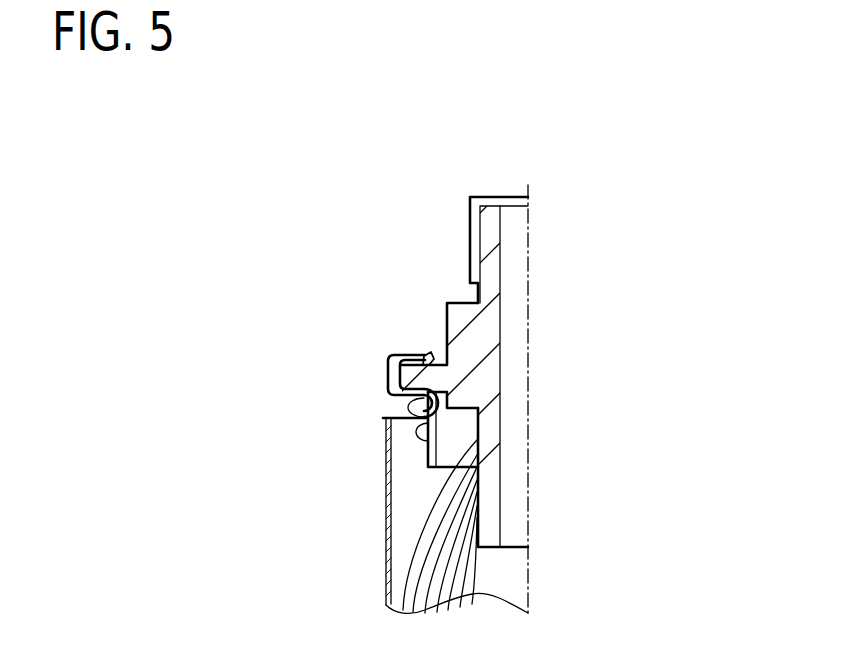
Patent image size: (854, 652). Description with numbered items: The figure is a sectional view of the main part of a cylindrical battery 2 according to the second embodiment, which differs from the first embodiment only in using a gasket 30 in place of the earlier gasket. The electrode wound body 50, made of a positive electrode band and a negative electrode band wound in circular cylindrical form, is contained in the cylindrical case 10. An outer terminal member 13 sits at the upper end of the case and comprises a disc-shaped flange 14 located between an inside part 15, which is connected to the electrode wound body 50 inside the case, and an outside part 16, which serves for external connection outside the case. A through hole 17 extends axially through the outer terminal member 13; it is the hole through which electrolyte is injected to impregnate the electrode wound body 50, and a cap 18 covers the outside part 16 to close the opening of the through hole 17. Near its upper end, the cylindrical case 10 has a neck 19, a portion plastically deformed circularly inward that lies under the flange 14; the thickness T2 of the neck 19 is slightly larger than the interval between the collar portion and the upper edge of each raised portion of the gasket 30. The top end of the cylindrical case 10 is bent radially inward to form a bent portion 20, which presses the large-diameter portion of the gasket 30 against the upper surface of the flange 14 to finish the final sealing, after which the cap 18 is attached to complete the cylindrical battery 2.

The cylindrical battery 2 is at (287, 331).
The cylindrical case 10 is at (388, 535).
The outer terminal member 13 is at (488, 318).
The flange 14 is at (388, 359).
The inside part 15 is at (481, 517).
The outside part 16 is at (488, 237).
The through hole 17 is at (517, 368).
The cap 18 is at (493, 198).
The neck 19 is at (387, 433).
The bent portion 20 is at (405, 356).
The gasket 30 is at (428, 454).
The electrode wound body 50 is at (427, 592).
The thickness of the neck T2 is at (393, 418).